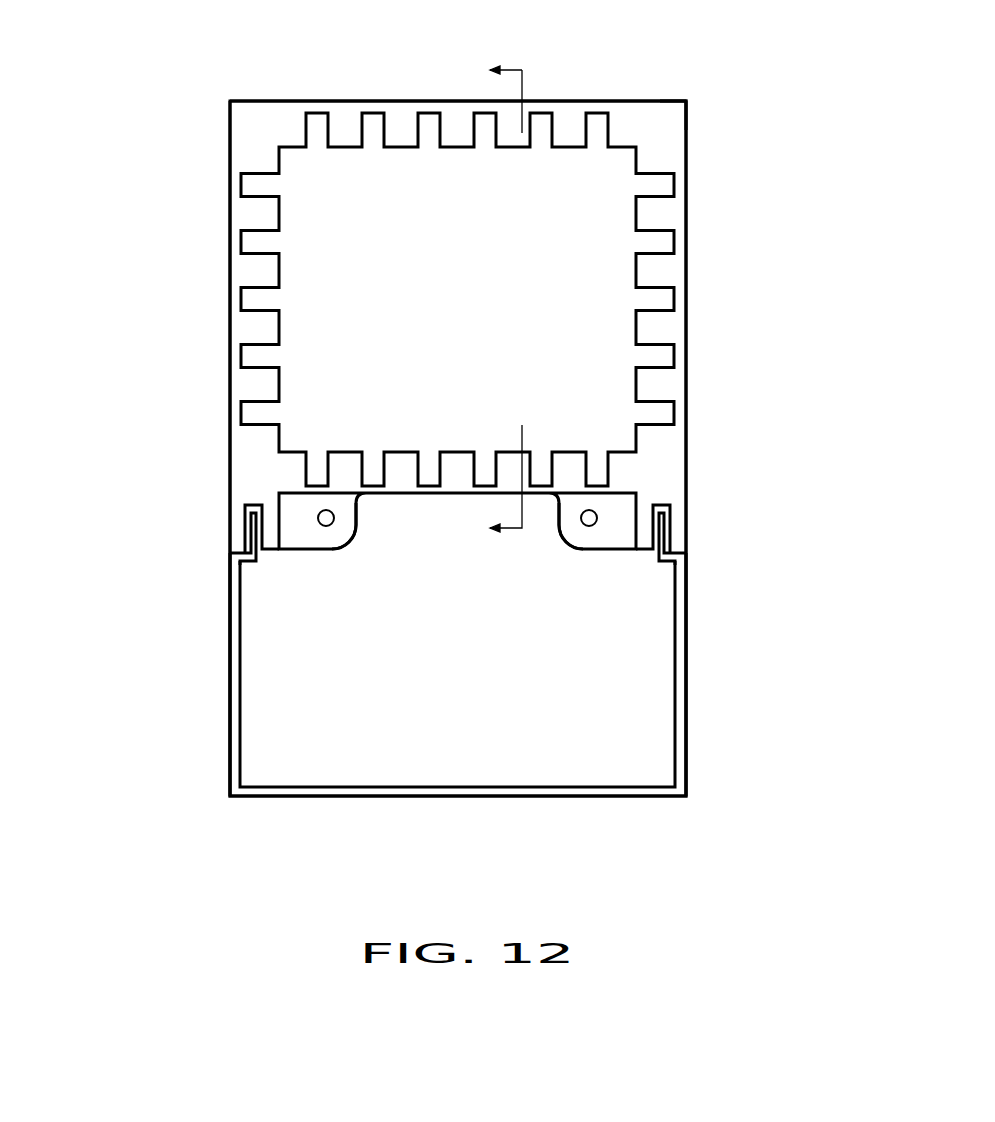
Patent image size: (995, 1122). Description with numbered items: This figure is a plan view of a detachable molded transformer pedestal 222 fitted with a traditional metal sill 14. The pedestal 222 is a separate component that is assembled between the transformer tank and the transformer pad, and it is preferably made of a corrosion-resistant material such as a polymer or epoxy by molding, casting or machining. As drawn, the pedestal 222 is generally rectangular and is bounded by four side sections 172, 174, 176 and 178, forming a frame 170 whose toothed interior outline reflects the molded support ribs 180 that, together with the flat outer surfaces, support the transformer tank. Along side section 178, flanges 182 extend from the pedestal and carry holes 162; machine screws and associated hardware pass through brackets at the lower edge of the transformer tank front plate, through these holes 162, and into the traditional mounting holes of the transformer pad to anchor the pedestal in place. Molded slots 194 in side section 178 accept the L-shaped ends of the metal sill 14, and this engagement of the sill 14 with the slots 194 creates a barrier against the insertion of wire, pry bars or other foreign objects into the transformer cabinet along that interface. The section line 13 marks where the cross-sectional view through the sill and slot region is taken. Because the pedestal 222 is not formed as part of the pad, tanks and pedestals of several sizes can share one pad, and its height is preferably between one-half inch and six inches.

The section line 13- 13 is at (486, 301).
The metal sill 14 is at (513, 797).
The holes 162 is at (333, 525).
The frame 170 is at (260, 134).
The side section 172 is at (230, 305).
The side section 174 is at (313, 100).
The side section 176 is at (686, 205).
The side section 178 is at (432, 494).
The molded support ribs 180 is at (372, 125).
The pedestal flanges 182 is at (330, 550).
The molded slots 194 is at (260, 505).
The pedestal 222 is at (683, 101).